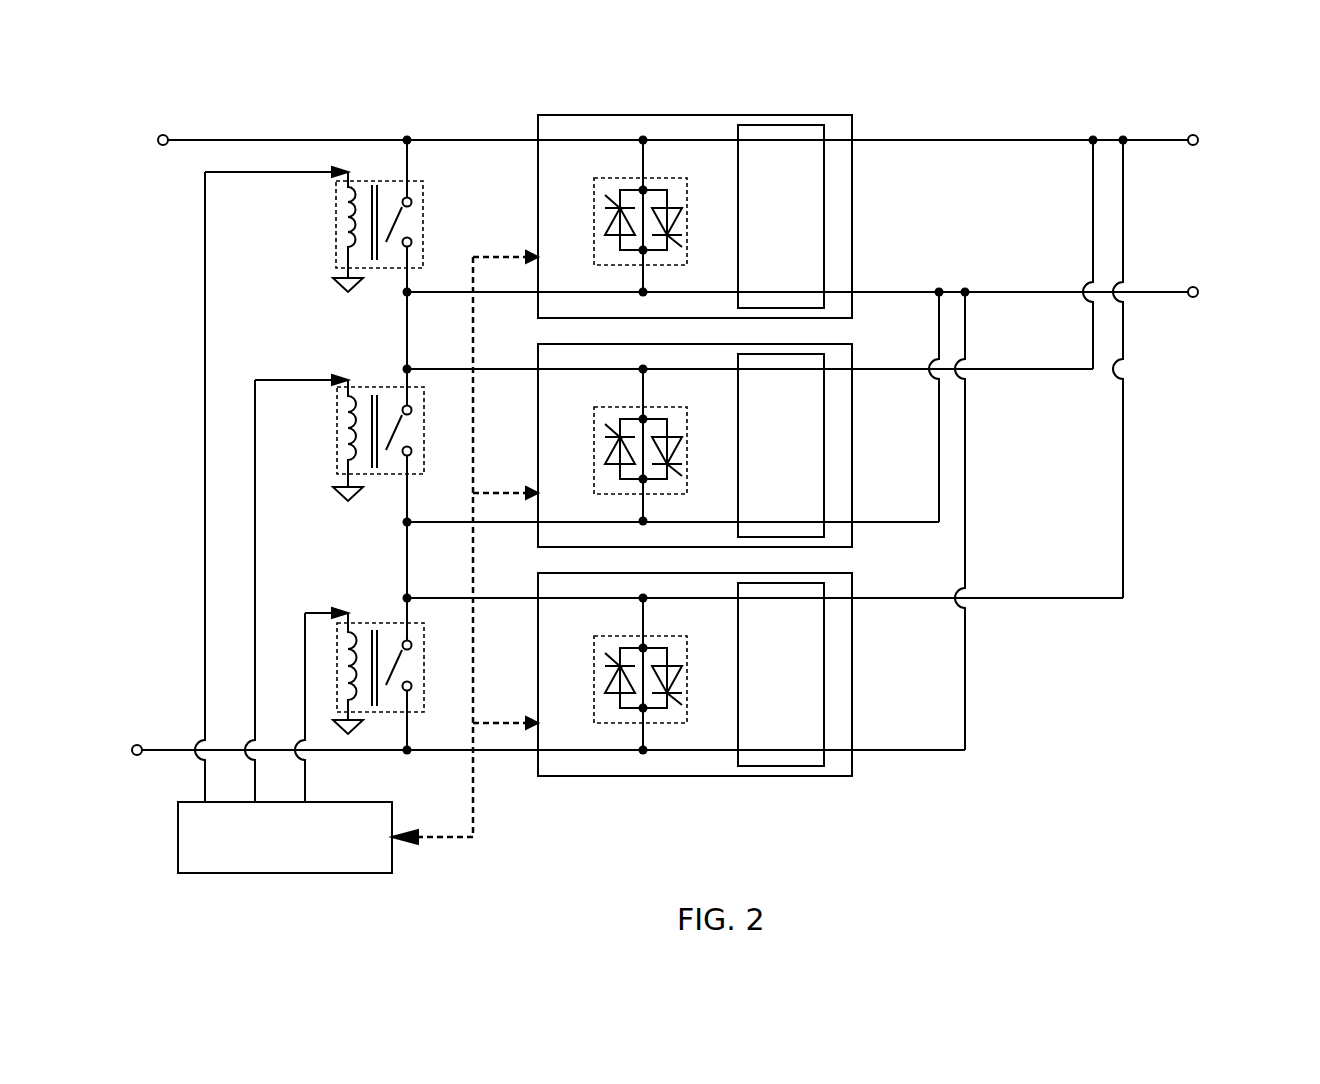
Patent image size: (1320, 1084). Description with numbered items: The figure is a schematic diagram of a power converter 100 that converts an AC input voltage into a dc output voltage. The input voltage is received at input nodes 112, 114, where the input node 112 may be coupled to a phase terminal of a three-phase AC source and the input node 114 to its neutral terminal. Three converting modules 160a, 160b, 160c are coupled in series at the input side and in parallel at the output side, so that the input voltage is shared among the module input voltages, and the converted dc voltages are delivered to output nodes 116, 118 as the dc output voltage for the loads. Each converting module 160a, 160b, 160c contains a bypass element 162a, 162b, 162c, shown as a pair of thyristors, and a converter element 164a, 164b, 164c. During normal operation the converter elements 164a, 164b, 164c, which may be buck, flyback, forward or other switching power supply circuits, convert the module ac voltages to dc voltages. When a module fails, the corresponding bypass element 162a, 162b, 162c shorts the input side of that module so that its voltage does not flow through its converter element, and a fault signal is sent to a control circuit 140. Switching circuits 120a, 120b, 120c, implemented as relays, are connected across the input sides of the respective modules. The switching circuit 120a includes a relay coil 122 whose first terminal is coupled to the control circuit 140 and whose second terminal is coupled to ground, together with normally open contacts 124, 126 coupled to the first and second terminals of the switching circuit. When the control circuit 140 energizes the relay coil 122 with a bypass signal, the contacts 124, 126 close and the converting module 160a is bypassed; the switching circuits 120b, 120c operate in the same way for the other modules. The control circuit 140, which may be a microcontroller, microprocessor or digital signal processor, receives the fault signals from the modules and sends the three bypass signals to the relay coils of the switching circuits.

The power converter 100 is at (702, 474).
The input node 112 is at (163, 147).
The input node 114 is at (137, 744).
The output node 116 is at (1198, 140).
The output node 118 is at (1198, 292).
The switching circuit 120a is at (369, 224).
The switching circuit 120b is at (370, 387).
The switching circuit 120c is at (375, 623).
The relay coil 122 is at (340, 232).
The contact 124 is at (411, 199).
The contact 126 is at (411, 240).
The control circuit 140 is at (358, 520).
The converting module 160a is at (747, 209).
The converting module 160b is at (743, 462).
The converting module 160c is at (730, 696).
The bypass element 162a is at (688, 245).
The bypass element 162b is at (665, 442).
The bypass element 162c is at (664, 671).
The converter element 164a is at (781, 216).
The converter element 164b is at (781, 445).
The converter element 164c is at (781, 674).